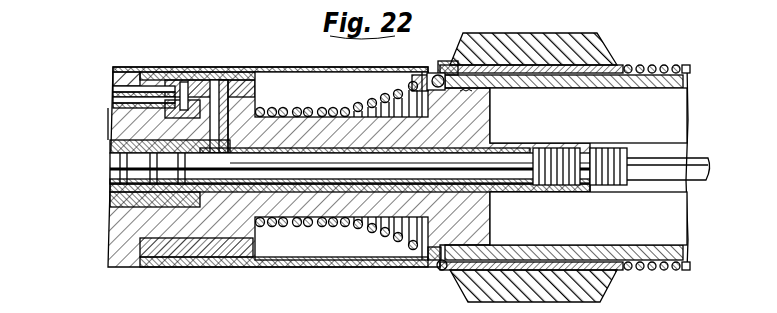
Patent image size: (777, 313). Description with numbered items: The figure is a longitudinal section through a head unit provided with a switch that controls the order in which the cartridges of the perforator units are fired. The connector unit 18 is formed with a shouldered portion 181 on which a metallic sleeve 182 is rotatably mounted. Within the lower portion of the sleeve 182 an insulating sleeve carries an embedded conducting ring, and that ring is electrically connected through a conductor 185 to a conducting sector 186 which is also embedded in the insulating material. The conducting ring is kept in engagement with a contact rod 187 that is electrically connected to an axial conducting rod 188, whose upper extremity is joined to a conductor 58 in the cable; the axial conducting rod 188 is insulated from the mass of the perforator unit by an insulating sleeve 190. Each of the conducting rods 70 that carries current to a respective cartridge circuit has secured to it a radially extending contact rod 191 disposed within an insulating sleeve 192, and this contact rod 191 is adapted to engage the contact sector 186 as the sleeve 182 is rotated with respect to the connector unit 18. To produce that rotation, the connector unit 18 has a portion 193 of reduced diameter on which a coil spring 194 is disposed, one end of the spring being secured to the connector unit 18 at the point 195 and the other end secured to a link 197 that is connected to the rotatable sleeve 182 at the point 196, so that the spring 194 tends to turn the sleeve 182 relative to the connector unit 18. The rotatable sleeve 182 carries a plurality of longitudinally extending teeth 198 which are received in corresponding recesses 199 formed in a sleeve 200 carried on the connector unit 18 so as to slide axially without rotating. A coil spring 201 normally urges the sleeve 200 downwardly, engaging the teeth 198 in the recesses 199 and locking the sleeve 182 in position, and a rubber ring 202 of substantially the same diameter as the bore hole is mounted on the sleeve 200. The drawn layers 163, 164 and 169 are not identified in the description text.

The connector unit 18 is at (113, 68).
The conductor 58 is at (700, 157).
The conducting rods 70 is at (110, 112).
The shouldered portion 181 is at (137, 72).
The metallic sleeve 182 is at (206, 68).
The insulating layer 163 is at (249, 68).
The intermediate layer 164 is at (244, 68).
The conductor 185 is at (190, 84).
The conducting sector 186 is at (182, 72).
The contact rod 187 is at (252, 70).
The spring housing 169 is at (258, 92).
The axial conducting rod 188 is at (339, 94).
The insulating sleeve 190 is at (320, 153).
The contact rod 191 is at (113, 89).
The insulating sleeve 192 is at (110, 100).
The portion of reduced diameter 193 is at (368, 127).
The coil spring 194 is at (410, 81).
The point 195 is at (230, 265).
The point 196 is at (445, 70).
The link 197 is at (448, 56).
The teeth 198 is at (427, 253).
The recesses 199 is at (442, 270).
The sleeve 200 is at (567, 38).
The coil spring 201 is at (660, 67).
The rubber ring 202 is at (598, 66).